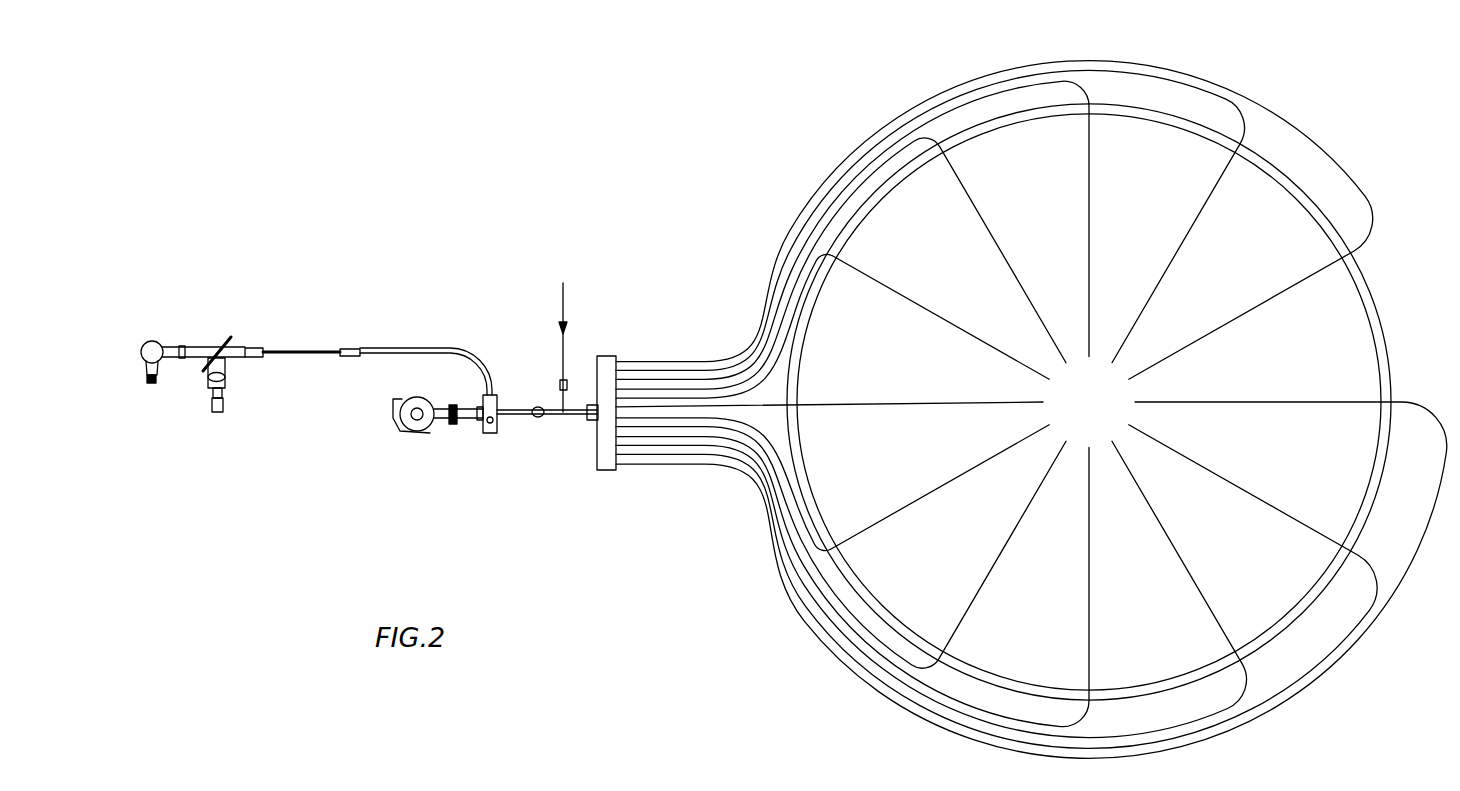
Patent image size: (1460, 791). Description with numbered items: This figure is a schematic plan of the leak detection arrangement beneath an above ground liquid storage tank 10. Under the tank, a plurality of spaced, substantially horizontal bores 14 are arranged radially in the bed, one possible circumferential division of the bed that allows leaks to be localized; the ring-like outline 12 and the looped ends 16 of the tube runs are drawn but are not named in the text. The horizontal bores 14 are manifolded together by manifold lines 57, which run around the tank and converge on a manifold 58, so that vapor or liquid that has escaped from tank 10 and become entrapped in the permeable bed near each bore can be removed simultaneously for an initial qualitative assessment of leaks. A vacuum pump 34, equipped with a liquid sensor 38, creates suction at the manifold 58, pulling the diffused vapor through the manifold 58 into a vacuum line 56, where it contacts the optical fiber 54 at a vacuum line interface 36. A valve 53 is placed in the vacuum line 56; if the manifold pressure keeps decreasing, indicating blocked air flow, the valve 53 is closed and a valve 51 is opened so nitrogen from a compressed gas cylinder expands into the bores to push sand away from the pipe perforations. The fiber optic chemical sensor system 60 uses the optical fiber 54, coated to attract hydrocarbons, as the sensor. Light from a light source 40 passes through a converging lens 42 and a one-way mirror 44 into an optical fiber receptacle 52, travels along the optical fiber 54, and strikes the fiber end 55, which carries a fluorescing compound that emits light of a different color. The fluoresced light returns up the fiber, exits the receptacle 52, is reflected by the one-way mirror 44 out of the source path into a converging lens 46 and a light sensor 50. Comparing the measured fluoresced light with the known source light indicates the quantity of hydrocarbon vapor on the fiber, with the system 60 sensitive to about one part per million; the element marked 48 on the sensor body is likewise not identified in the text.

The tank 10 is at (1376, 296).
The circumferential tube 12 is at (1125, 107).
The horizontal bores 14 is at (1092, 192).
The tube loop 16 is at (1265, 122).
The vacuum pump 34 is at (400, 420).
The vacuum line interface 36 is at (488, 434).
The liquid sensor 38 is at (452, 426).
The light source 40 is at (141, 350).
The converging lens 42 is at (183, 358).
The one-way mirror 44 is at (231, 337).
The converging lens 46 is at (207, 383).
The seal ring 48 is at (230, 383).
The light sensor 50 is at (218, 412).
The valve 51 is at (560, 380).
The optical fiber receptacle 52 is at (262, 349).
The valve 53 is at (537, 407).
The optical fiber 54 is at (448, 346).
The fiber end 55 is at (494, 433).
The vacuum line 56 is at (590, 421).
The manifold lines 57 is at (768, 450).
The manifold 58 is at (600, 471).
The fiber optic chemical sensor system (FOCS) 60 is at (383, 325).